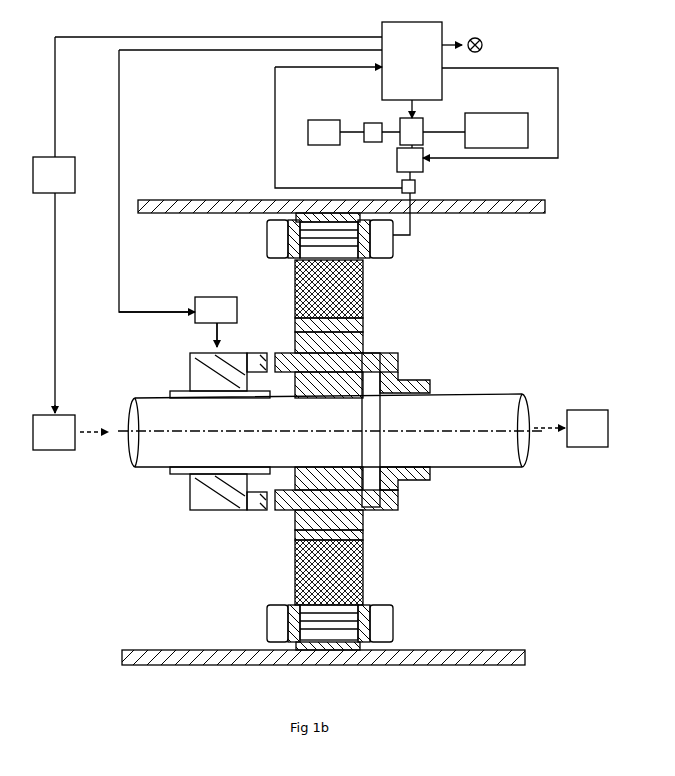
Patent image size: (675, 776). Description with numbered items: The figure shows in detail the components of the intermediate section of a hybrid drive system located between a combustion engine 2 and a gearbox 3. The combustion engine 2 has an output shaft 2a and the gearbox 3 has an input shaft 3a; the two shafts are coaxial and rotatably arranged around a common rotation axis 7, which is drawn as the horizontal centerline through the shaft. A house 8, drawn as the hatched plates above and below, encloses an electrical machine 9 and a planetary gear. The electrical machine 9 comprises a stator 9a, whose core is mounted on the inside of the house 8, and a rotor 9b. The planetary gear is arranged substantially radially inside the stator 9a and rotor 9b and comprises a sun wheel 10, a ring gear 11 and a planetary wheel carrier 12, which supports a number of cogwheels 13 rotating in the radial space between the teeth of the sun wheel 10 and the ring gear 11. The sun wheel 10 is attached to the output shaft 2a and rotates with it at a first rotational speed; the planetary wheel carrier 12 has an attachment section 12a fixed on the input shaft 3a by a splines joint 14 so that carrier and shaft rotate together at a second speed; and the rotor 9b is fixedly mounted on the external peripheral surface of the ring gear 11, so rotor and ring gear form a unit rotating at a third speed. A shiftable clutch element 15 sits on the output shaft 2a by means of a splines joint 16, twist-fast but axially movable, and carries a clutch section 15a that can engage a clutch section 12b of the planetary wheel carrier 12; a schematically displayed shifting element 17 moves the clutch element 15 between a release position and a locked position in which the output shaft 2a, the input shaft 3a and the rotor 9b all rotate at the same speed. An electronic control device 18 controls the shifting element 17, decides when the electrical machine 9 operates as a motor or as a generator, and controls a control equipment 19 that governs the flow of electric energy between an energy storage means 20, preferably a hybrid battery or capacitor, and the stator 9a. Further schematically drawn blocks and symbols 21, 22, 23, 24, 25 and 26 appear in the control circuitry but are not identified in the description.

The combustion engine 2 is at (56, 437).
The output shaft 2a is at (158, 448).
The gearbox 3 is at (590, 435).
The input shaft 3a is at (480, 450).
The common rotation axis 7 is at (331, 431).
The house 8 is at (205, 650).
The electrical machine 9 is at (303, 256).
The stator 9a is at (380, 245).
The rotor 9b is at (295, 291).
The sun wheel 10 is at (318, 392).
The ring gear 11 is at (363, 323).
The planetary wheel carrier 12 is at (388, 368).
The attachment section 12a is at (405, 482).
The clutch section 12b is at (283, 505).
The cogwheels 13 is at (345, 345).
The splines joint 14 is at (412, 473).
The clutch element 15 is at (205, 380).
The clutch section 15a is at (248, 512).
The splines joint 16 is at (175, 394).
The shifting element 17 is at (215, 300).
The electronic control device 18 is at (421, 70).
The control equipment 19 is at (397, 160).
The energy storage means 20 is at (492, 128).
The sensor 21 is at (322, 125).
The converter 22 is at (372, 123).
The switch 23 is at (408, 138).
The connection 24 is at (415, 187).
The signal output 25 is at (485, 45).
The sensor 26 is at (57, 170).